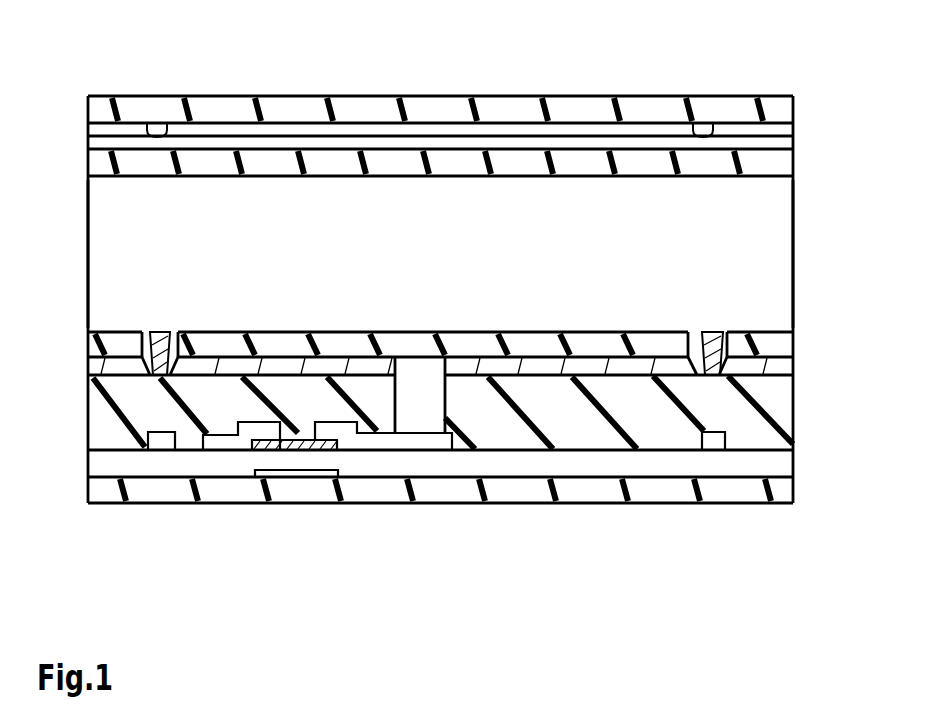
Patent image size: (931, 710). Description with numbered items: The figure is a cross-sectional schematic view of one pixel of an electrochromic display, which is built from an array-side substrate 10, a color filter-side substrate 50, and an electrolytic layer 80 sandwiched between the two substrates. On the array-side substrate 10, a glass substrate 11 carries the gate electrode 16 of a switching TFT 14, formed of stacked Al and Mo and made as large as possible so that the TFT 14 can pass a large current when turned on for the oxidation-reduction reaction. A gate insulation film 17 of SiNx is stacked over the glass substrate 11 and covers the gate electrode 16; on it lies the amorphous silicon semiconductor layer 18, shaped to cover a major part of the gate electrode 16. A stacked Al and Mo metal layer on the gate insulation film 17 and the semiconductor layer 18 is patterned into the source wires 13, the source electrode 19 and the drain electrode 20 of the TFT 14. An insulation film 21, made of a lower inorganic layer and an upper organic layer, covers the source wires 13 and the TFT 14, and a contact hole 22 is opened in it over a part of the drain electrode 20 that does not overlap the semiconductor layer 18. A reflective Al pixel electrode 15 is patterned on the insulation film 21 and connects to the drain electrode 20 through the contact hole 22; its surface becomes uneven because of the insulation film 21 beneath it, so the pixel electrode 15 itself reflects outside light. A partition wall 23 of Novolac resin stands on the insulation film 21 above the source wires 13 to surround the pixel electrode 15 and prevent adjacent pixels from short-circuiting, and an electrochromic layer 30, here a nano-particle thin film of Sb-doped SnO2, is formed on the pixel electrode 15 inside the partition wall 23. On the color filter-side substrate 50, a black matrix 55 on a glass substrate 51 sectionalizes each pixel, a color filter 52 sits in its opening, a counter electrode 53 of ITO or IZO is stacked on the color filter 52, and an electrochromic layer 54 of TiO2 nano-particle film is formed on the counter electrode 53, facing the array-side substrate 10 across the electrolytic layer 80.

The array-side substrate 10 is at (82, 332).
The glass substrate 11 is at (794, 487).
The source wire 13 is at (730, 550).
The switching TFT 14 is at (332, 534).
The pixel electrode 15 is at (794, 360).
The gate electrode 16 is at (302, 474).
The gate insulation film 17 is at (383, 543).
The semiconductor layer 18 is at (282, 443).
The source electrode 19 is at (240, 442).
The drain electrode 20 is at (392, 502).
The insulation film 21 is at (794, 407).
The contact hole 22 is at (426, 369).
The partition wall 23 is at (712, 327).
The electrochromic layer 30 is at (794, 342).
The color filter-side substrate 50 is at (78, 93).
The glass substrate 51 is at (772, 96).
The color filter 52 is at (793, 127).
The counter electrode 53 is at (793, 139).
The electrochromic layer 54 is at (793, 159).
The black matrix 55 is at (703, 133).
The electrolytic layer 80 is at (352, 252).